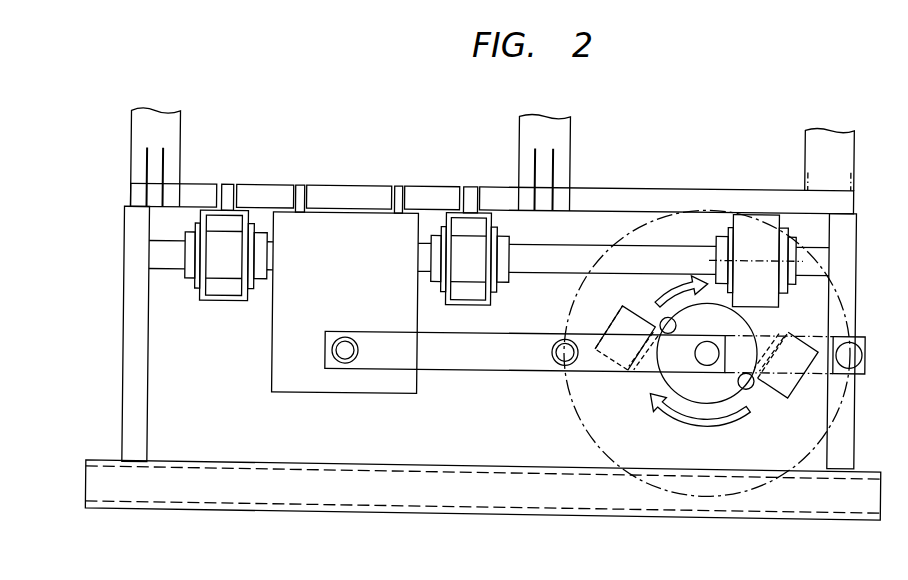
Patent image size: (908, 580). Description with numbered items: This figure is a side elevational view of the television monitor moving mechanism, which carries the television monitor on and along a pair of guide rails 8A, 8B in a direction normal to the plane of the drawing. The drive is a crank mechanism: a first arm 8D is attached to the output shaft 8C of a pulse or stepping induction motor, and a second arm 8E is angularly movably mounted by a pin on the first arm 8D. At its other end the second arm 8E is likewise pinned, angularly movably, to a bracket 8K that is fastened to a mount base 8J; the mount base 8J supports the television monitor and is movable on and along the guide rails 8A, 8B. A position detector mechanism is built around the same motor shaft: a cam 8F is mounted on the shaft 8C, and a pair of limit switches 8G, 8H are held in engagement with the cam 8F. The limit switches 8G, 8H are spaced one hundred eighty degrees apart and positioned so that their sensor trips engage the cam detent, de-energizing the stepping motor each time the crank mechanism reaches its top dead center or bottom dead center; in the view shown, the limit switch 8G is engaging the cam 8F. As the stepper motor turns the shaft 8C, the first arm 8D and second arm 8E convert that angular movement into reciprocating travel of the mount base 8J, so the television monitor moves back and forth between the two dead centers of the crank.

The guide rail 8A is at (489, 213).
The guide rail 8B is at (566, 245).
The output shaft 8C is at (708, 356).
The first arm 8D is at (595, 367).
The second arm 8E is at (388, 347).
The cam 8F is at (683, 371).
The limit switch 8G is at (628, 322).
The limit switch 8H is at (793, 343).
The mount base 8J is at (257, 188).
The bracket 8K is at (280, 348).